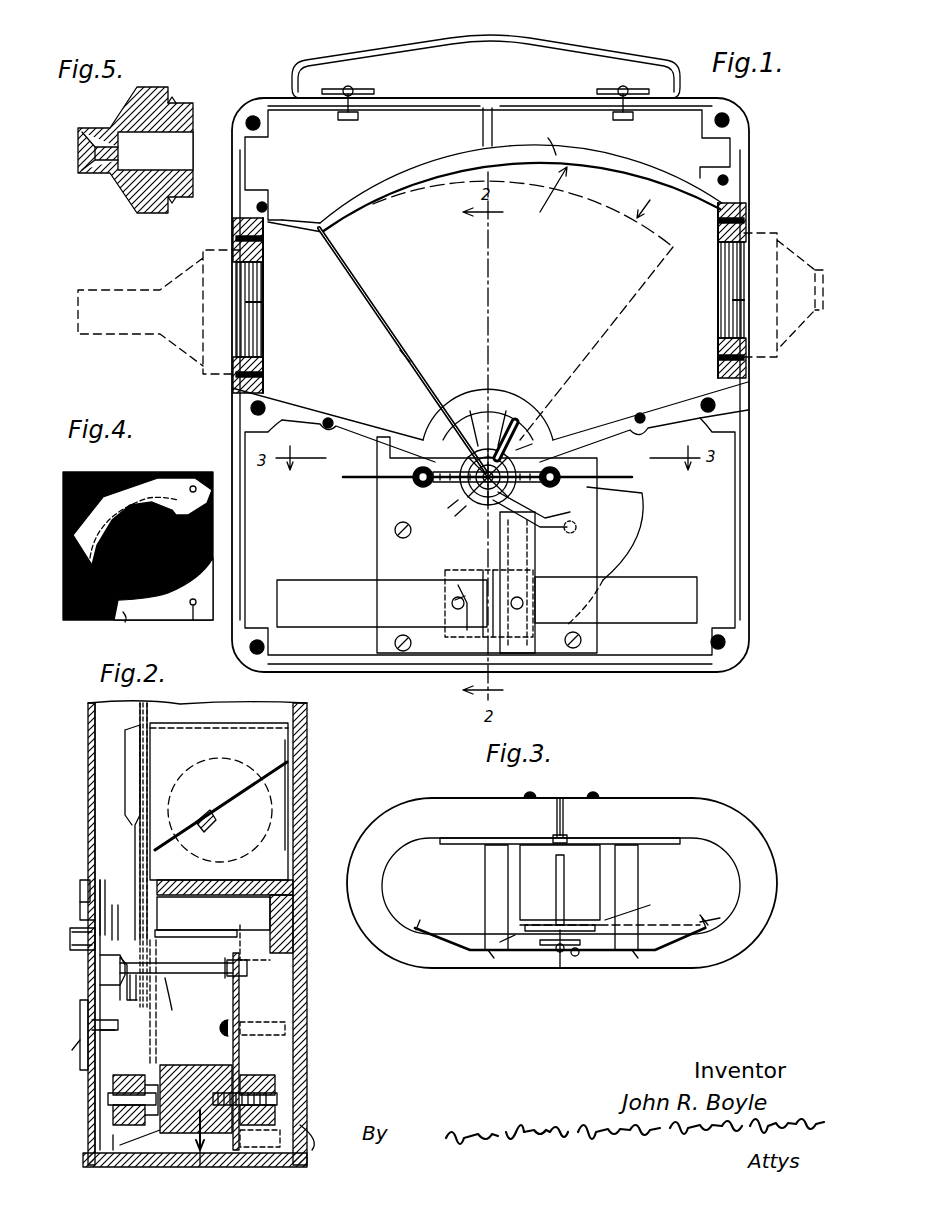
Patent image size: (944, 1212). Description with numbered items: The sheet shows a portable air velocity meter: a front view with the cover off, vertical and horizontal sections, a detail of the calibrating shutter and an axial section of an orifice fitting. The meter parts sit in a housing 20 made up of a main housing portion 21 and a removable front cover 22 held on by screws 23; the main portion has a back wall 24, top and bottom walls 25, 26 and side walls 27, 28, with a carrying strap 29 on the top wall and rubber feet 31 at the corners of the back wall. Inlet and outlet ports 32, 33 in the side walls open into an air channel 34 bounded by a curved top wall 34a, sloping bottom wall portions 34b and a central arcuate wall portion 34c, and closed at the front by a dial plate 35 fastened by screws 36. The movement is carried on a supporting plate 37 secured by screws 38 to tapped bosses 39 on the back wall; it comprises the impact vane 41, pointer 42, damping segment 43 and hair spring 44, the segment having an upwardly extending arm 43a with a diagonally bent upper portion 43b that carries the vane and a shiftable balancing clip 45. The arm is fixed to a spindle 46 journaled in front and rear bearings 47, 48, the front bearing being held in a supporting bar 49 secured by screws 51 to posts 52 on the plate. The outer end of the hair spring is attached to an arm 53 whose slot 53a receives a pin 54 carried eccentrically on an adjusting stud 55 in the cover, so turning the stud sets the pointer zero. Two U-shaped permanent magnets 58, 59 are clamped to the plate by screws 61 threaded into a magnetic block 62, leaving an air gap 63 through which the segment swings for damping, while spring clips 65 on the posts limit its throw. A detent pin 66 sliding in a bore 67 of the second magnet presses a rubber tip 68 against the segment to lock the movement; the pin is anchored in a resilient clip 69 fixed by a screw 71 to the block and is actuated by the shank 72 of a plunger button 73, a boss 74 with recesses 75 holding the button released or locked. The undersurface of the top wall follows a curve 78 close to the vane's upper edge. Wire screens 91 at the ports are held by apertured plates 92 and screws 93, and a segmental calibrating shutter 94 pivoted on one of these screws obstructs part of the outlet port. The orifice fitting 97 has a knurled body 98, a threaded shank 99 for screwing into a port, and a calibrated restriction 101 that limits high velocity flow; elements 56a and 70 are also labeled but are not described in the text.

In FIG. 2, the housing 20 is at (296, 1160).
In FIG. 1, the main housing portion 21 is at (256, 84).
In FIG. 2, the main housing portion 21 is at (318, 751).
In FIG. 2, the removable front cover 22 is at (82, 884).
In FIG. 1, the screws 23 is at (260, 128).
In FIG. 1, the back wall 24 is at (304, 160).
In FIG. 2, the back wall 24 is at (305, 778).
In FIG. 1, the top wall 25 is at (440, 102).
In FIG. 1, the bottom wall 26 is at (368, 672).
In FIG. 1, the side wall 27 is at (236, 440).
In FIG. 1, the side wall 28 is at (752, 424).
In FIG. 1, the carrying strap 29 is at (388, 44).
In FIG. 2, the rubber feet or pads 31 is at (312, 1138).
In FIG. 1, the inlet port 32 is at (262, 302).
In FIG. 1, the outlet port 33 is at (722, 300).
In FIG. 2, the outlet port 33 is at (92, 742).
In FIG. 1, the air channel 34 is at (600, 222).
In FIG. 1, the curved top wall 34a is at (551, 136).
In FIG. 1, the sloping bottom wall portions 34b is at (350, 392).
In FIG. 1, the central arcuate wall portion 34c is at (490, 400).
In FIG. 2, the dial plate 35 is at (140, 706).
In FIG. 1, the screws 36 is at (267, 203).
In FIG. 1, the supporting plate 37 is at (377, 560).
In FIG. 2, the supporting plate 37 is at (240, 992).
In FIG. 3, the supporting plate 37 is at (440, 846).
In FIG. 1, the screws 38 is at (394, 530).
In FIG. 2, the screws 38 is at (222, 1025).
In FIG. 2, the tapped bosses 39 is at (292, 1018).
In FIG. 1, the impact vane 41 is at (352, 290).
In FIG. 2, the impact vane 41 is at (270, 738).
In FIG. 1, the pointer 42 is at (412, 352).
In FIG. 2, the pointer 42 is at (128, 778).
In FIG. 1, the damping segment 43 is at (648, 540).
In FIG. 2, the damping segment 43 is at (158, 1050).
In FIG. 3, the damping segment 43 is at (690, 912).
In FIG. 1, the upwardly extending arm 43a is at (578, 520).
In FIG. 2, the upwardly extending arm 43a is at (160, 915).
In FIG. 2, the diagonally bent upper portion 43b is at (242, 790).
In FIG. 1, the hair spring 44 is at (450, 514).
In FIG. 2, the hair spring 44 is at (185, 944).
In FIG. 2, the balancing clip 45 is at (205, 815).
In FIG. 1, the transverse spindle 46 is at (520, 484).
In FIG. 2, the transverse spindle 46 is at (188, 994).
In FIG. 3, the transverse spindle 46 is at (556, 888).
In FIG. 2, the front bearing 47 is at (98, 980).
In FIG. 3, the front bearing 47 is at (556, 972).
In FIG. 2, the rear bearing 48 is at (247, 970).
In FIG. 3, the rear bearing 48 is at (556, 842).
In FIG. 1, the front supporting bar 49 is at (532, 460).
In FIG. 1, the screws 51 is at (416, 490).
In FIG. 3, the screws 51 is at (494, 960).
In FIG. 3, the supporting posts 52 is at (485, 876).
In FIG. 1, the arm 53 is at (478, 505).
In FIG. 2, the arm 53 is at (140, 1000).
In FIG. 3, the arm 53 is at (545, 950).
In FIG. 2, the slot 53a is at (120, 905).
In FIG. 3, the slot 53a is at (590, 958).
In FIG. 2, the pin 54 is at (102, 880).
In FIG. 2, the adjusting stud 55 is at (76, 950).
In FIG. 1, the stop 56a is at (515, 420).
In FIG. 1, the permanent magnet 58 is at (295, 590).
In FIG. 3, the permanent magnet 58 is at (405, 955).
In FIG. 1, the permanent magnet 59 is at (692, 588).
In FIG. 2, the permanent magnet 59 is at (280, 1078).
In FIG. 3, the permanent magnet 59 is at (752, 928).
In FIG. 2, the screws 61 is at (280, 1098).
In FIG. 3, the screws 61 is at (528, 794).
In FIG. 2, the block 62 is at (210, 1075).
In FIG. 3, the block 62 is at (590, 850).
In FIG. 3, the air gap 63 is at (628, 912).
In FIG. 1, the resilient spring clips 65 is at (378, 480).
In FIG. 3, the resilient spring clips 65 is at (420, 924).
In FIG. 1, the detent pin 66 is at (540, 598).
In FIG. 2, the detent pin 66 is at (108, 1100).
In FIG. 2, the bore 67 is at (129, 1070).
In FIG. 2, the rubber tip 68 is at (129, 1127).
In FIG. 1, the resilient sheet metal clip 69 is at (492, 648).
In FIG. 2, the resilient sheet metal clip 69 is at (170, 1150).
In FIG. 1, the pointer tip 70 is at (648, 199).
In FIG. 2, the pointer tip 70 is at (118, 1036).
In FIG. 2, the screw 71 is at (206, 1147).
In FIG. 2, the shank 72 is at (118, 1020).
In FIG. 2, the plunger button 73 is at (80, 1005).
In FIG. 2, the boss 74 is at (120, 978).
In FIG. 2, the recesses 75 is at (66, 1052).
In FIG. 1, the curve 78 is at (543, 200).
In FIG. 1, the wire screen 91 is at (262, 280).
In FIG. 4, the wire screen 91 is at (122, 632).
In FIG. 1, the apertured plates 92 is at (262, 378).
In FIG. 4, the apertured plates 92 is at (168, 620).
In FIG. 1, the screws 93 is at (744, 210).
In FIG. 4, the screws 93 is at (210, 620).
In FIG. 4, the shutter 94 is at (150, 484).
In FIG. 5, the orifice fitting 97 is at (120, 110).
In FIG. 1, the knurled body portion 98 is at (240, 236).
In FIG. 5, the knurled body portion 98 is at (155, 86).
In FIG. 5, the threaded shank 99 is at (185, 104).
In FIG. 5, the calibrated restriction 101 is at (98, 152).